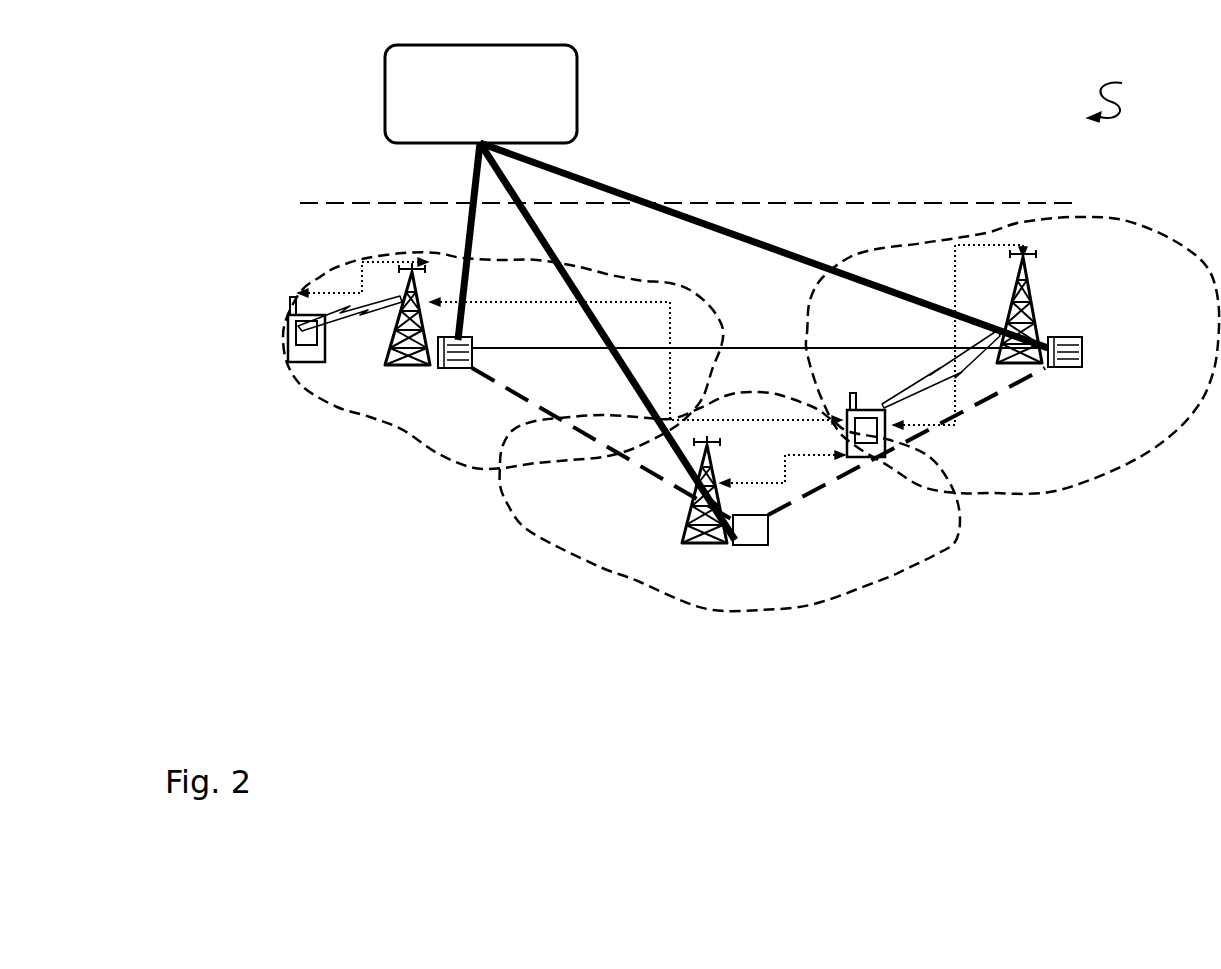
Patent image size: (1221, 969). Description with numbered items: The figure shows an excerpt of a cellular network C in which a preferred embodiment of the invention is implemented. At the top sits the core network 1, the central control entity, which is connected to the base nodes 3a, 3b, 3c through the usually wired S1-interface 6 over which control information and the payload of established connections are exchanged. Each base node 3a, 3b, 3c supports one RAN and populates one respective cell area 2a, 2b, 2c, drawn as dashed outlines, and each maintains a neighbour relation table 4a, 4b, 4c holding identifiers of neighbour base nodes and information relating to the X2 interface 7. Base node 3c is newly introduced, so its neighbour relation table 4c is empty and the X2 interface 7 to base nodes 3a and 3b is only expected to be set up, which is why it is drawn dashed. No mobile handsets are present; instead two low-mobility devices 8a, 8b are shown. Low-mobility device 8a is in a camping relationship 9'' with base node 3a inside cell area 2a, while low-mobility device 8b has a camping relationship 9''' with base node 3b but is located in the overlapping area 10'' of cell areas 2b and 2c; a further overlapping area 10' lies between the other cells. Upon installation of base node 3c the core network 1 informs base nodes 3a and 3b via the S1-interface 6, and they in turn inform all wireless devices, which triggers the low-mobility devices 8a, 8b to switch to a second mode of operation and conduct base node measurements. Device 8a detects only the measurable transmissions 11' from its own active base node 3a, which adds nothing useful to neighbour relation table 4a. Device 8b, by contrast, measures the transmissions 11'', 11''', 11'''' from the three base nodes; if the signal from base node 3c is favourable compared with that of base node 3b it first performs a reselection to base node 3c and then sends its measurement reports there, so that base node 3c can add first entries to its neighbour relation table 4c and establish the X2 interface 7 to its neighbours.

The core network 1 is at (481, 94).
The cell area 2a is at (365, 395).
The cell area 2b is at (1071, 384).
The cell area 2c is at (653, 571).
The base node 3a is at (398, 370).
The base node 3b is at (1043, 288).
The base node 3c is at (670, 555).
The neighbour relation table 4a is at (463, 370).
The neighbour relation table 4b is at (1067, 367).
The neighbour relation table 4c is at (737, 550).
The S1-interface 6 is at (795, 247).
The X2 interface 7 is at (960, 403).
The low-mobility device 8a is at (282, 332).
The low-mobility device 8b is at (885, 455).
The camping relationship 9'' is at (348, 376).
The camping relationship 9''' is at (964, 413).
The overlapping area 10' is at (655, 501).
The overlapping area 10'' is at (1012, 387).
The measurable transmissions 11' is at (363, 270).
The measurable transmissions 11'' is at (636, 361).
The measurable transmissions 11''' is at (960, 337).
The measurable transmissions 11'''' is at (782, 463).
The cellular network C is at (1121, 93).